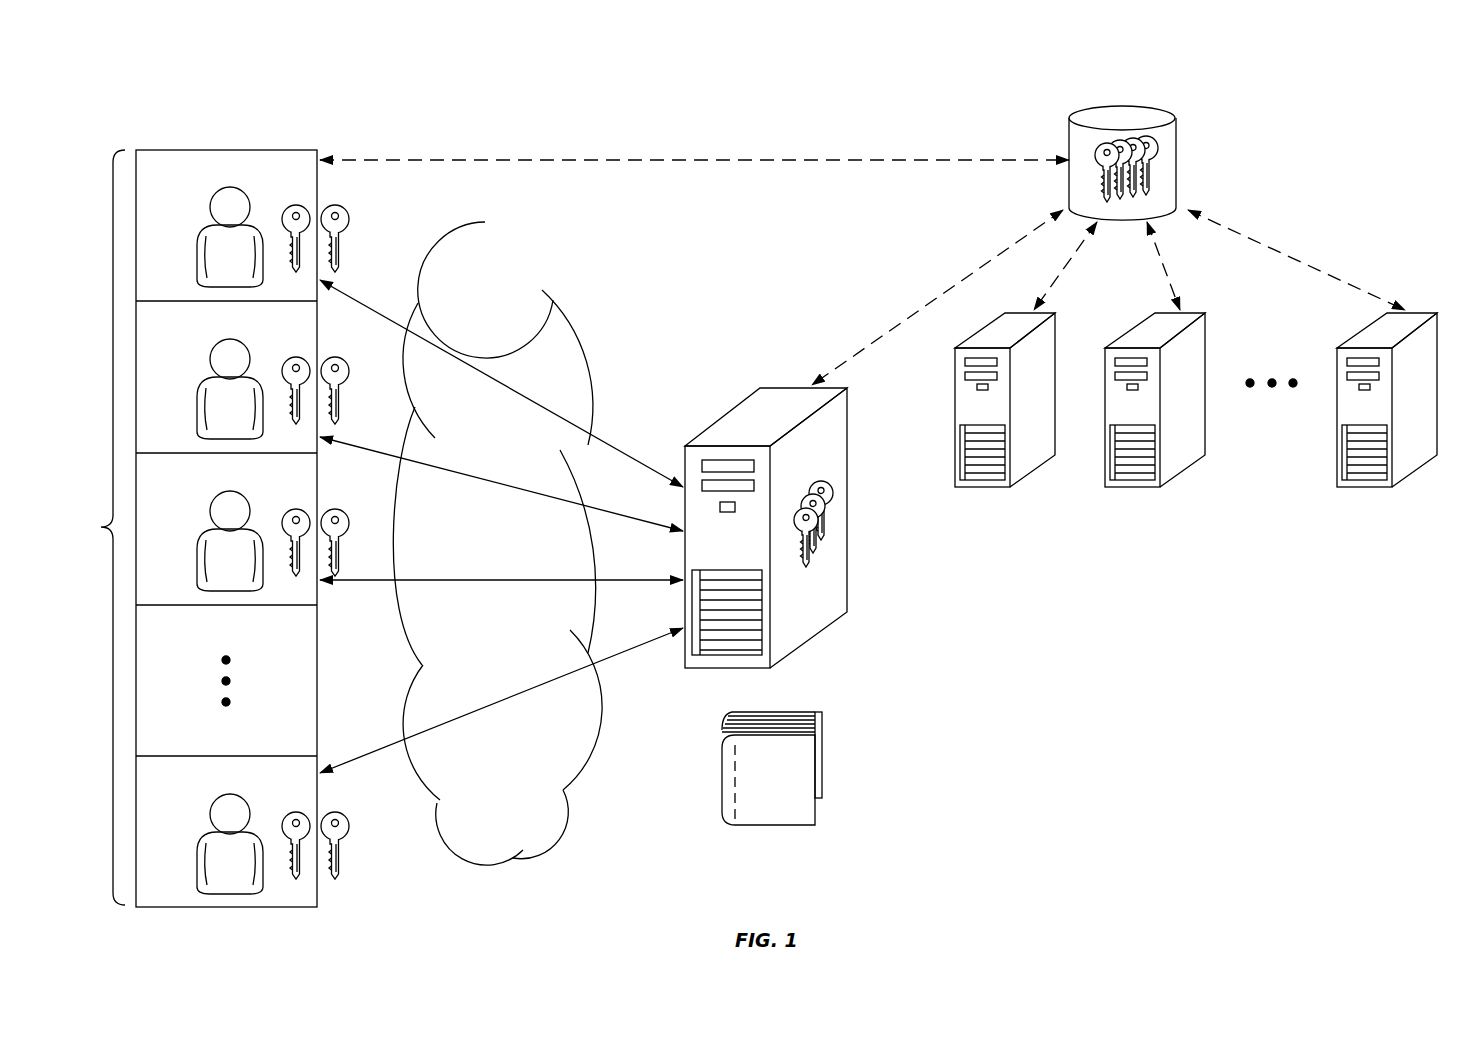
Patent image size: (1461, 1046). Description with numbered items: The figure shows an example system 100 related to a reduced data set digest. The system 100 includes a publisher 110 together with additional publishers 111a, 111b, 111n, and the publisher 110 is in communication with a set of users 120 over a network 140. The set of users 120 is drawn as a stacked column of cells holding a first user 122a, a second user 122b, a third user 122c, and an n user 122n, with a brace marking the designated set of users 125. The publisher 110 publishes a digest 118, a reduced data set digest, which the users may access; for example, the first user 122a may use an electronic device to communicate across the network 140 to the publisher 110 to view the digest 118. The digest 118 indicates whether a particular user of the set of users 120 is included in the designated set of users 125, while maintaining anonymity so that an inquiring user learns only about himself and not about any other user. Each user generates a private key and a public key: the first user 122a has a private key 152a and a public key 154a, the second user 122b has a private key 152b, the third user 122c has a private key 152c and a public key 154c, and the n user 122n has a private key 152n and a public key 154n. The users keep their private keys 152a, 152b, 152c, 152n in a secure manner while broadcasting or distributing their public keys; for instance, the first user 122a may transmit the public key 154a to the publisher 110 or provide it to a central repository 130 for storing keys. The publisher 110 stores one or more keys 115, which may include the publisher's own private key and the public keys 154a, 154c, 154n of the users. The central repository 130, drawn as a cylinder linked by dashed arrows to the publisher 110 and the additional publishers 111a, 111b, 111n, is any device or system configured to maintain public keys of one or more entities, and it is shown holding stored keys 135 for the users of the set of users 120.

The system 100 is at (1356, 100).
The publisher 110 is at (847, 568).
The publisher 111a is at (988, 488).
The publisher 111b is at (1138, 488).
The publisher 111n is at (1368, 488).
The keys 115 is at (836, 500).
The digest 118 is at (822, 752).
The set of users 120 is at (307, 150).
The first user 122a is at (203, 222).
The second user 122b is at (203, 374).
The third user 122c is at (203, 526).
The n user 122n is at (203, 829).
The designated set of users 125 is at (94, 527).
The central repository 130 is at (1176, 130).
The stored keys 135 is at (1143, 183).
The network 140 is at (585, 357).
The private key 152a is at (294, 205).
The private key 152b is at (294, 357).
The private key 152c is at (294, 509).
The private key 152n is at (294, 812).
The public key 154a is at (339, 205).
The public key 154c is at (339, 509).
The public key 154n is at (339, 812).